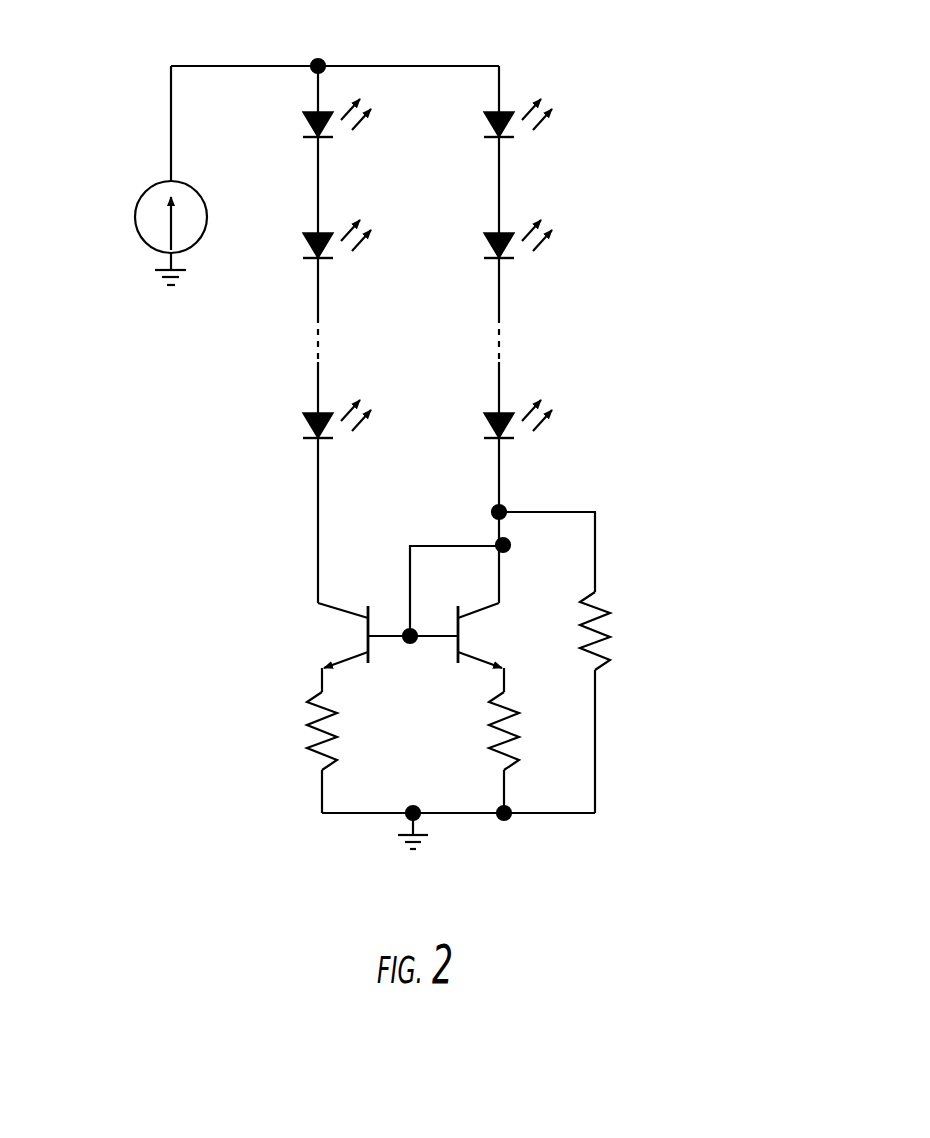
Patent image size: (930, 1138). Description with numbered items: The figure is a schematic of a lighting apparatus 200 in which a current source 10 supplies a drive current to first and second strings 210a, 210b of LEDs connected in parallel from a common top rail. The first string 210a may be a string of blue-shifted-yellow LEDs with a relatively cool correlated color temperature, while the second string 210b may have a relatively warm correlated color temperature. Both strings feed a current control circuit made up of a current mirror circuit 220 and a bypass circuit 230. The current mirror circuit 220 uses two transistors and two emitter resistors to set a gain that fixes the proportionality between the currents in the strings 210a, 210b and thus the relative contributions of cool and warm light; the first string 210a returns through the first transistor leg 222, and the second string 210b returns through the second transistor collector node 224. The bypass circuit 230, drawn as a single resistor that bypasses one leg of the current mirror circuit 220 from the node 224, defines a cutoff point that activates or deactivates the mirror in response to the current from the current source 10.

The current source 10 is at (136, 222).
The lighting apparatus 200 is at (718, 113).
The first string of LEDs 210a is at (292, 152).
The second string of LEDs 210b is at (559, 114).
The current mirror circuit 220 is at (234, 688).
The first transistor branch 222 is at (303, 601).
The second transistor collector node 224 is at (480, 538).
The bypass circuit 230 is at (693, 628).